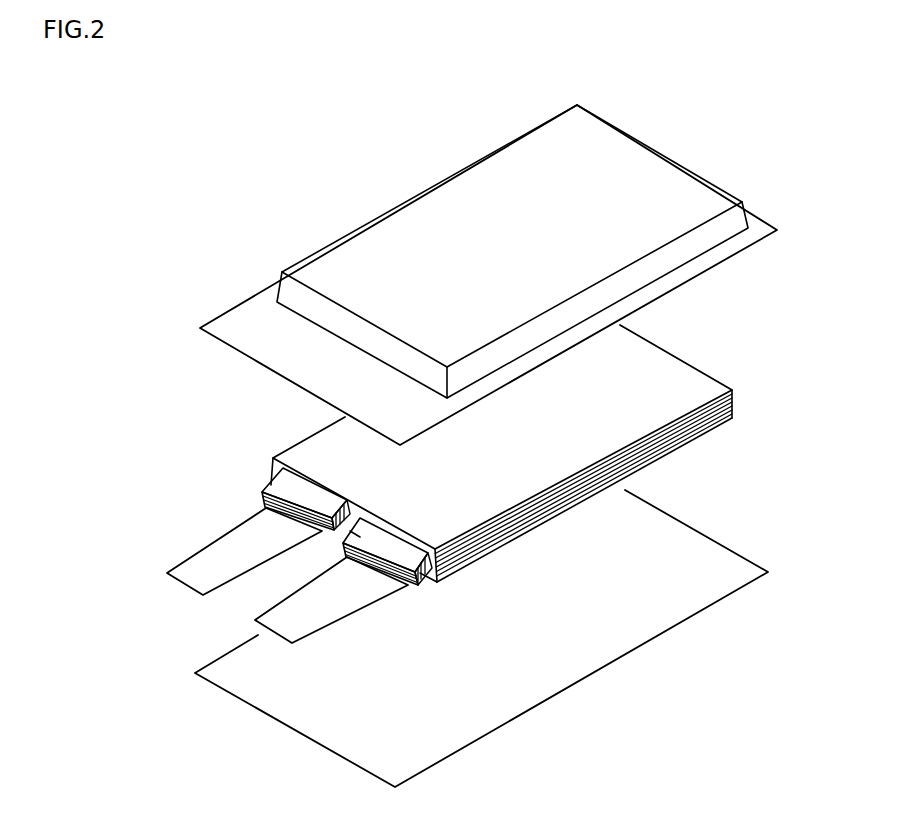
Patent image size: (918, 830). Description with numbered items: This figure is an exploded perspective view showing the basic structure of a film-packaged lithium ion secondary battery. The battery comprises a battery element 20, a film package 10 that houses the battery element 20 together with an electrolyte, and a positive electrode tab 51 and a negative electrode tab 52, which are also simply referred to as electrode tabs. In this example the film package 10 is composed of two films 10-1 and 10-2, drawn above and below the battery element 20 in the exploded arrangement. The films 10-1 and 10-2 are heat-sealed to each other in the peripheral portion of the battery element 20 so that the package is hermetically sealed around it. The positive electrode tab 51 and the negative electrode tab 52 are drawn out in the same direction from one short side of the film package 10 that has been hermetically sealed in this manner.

The film package 10 is at (498, 266).
The film 10-1 is at (713, 192).
The film 10-2 is at (715, 603).
The battery element 20 is at (693, 348).
The positive electrode tab 51 is at (182, 563).
The negative electrode tab 52 is at (258, 622).